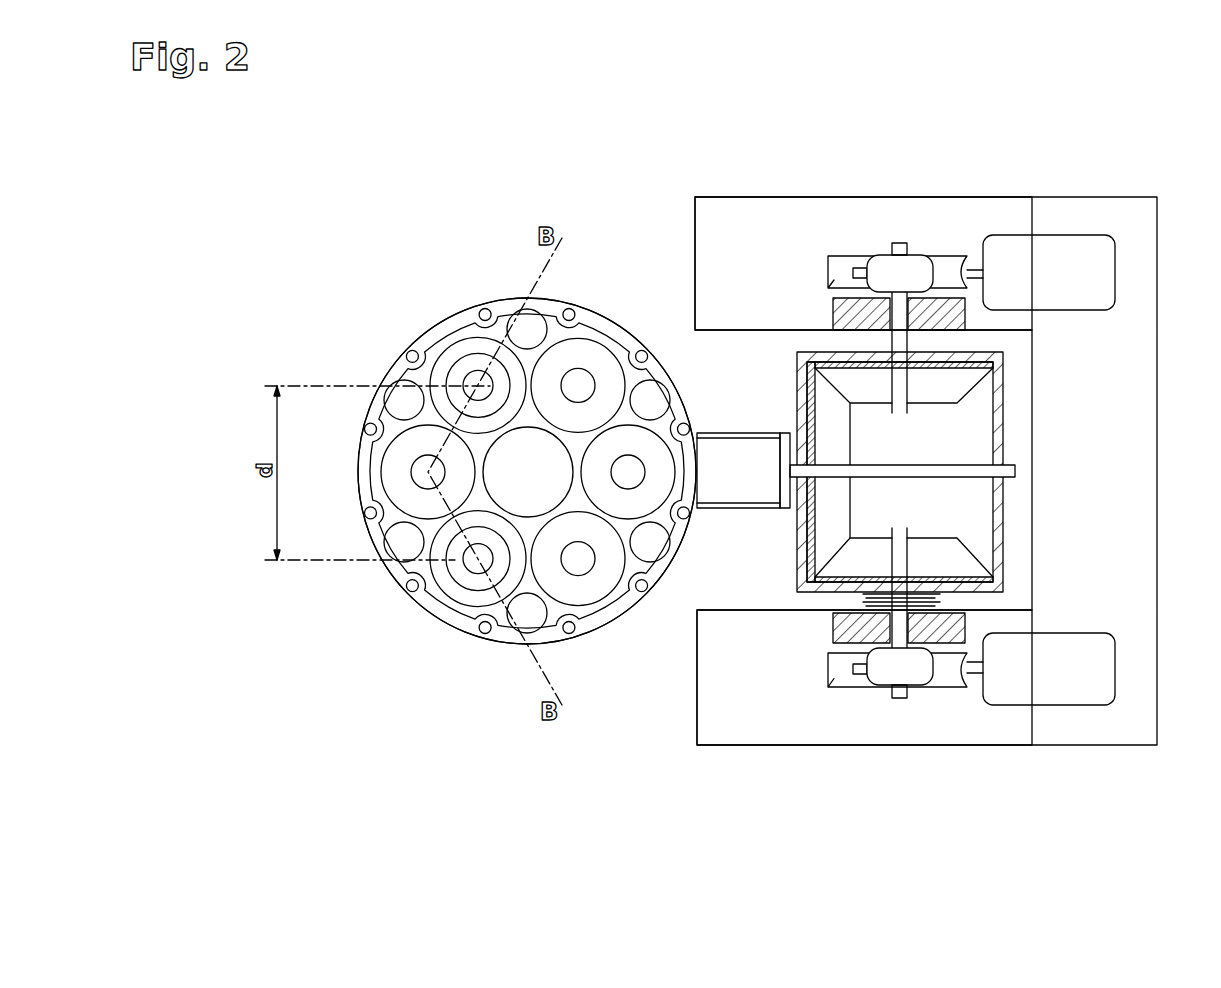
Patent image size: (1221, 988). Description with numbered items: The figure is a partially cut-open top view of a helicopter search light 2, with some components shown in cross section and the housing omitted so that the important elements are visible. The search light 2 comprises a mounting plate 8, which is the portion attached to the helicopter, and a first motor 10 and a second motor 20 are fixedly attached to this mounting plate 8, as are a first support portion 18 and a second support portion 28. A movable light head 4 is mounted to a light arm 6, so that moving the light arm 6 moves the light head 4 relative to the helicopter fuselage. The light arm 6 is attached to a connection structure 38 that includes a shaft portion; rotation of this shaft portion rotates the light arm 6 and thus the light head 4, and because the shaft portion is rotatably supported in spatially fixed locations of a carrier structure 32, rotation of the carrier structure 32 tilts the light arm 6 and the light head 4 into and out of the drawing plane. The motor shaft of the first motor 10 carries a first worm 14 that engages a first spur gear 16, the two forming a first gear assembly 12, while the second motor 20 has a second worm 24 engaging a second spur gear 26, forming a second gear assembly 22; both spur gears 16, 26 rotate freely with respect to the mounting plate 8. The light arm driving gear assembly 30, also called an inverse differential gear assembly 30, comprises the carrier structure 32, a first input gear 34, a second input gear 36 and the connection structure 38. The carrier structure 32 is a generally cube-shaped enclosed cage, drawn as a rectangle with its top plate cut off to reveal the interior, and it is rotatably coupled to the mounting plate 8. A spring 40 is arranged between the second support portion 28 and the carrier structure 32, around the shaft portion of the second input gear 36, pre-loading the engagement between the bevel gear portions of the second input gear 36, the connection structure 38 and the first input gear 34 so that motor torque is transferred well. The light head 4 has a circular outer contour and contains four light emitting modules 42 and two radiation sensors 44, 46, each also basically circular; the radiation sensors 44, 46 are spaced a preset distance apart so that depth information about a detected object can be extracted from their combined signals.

The helicopter search light 2 is at (383, 242).
The movable light head 4 is at (425, 642).
The light arm 6 is at (715, 450).
The mounting plate 8 is at (1128, 515).
The first motor 10 is at (1087, 270).
The first gear assembly 12 is at (757, 237).
The first worm 14 is at (917, 257).
The first spur gear 16 is at (847, 262).
The first support portion 18 is at (830, 310).
The second motor 20 is at (1090, 668).
The second gear assembly 22 is at (760, 705).
The second worm 24 is at (917, 677).
The second spur gear 26 is at (852, 675).
The second support portion 28 is at (840, 625).
The light arm driving gear assembly 30 is at (907, 484).
The carrier structure 32 is at (997, 433).
The first input gear 34 is at (955, 385).
The second input gear 36 is at (952, 553).
The connection structure 38 is at (827, 417).
The spring 40 is at (940, 607).
The light emitting modules 42 is at (588, 353).
The radiation sensor 44 is at (468, 368).
The radiation sensor 46 is at (475, 567).